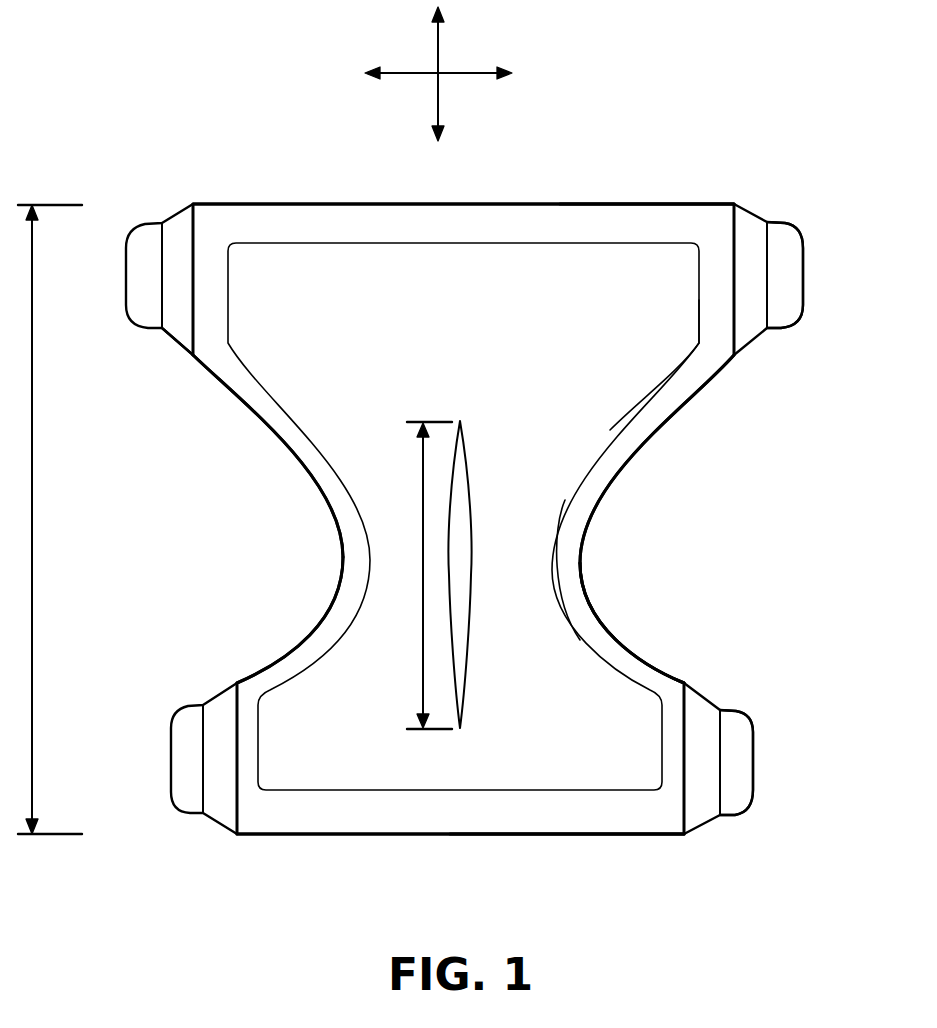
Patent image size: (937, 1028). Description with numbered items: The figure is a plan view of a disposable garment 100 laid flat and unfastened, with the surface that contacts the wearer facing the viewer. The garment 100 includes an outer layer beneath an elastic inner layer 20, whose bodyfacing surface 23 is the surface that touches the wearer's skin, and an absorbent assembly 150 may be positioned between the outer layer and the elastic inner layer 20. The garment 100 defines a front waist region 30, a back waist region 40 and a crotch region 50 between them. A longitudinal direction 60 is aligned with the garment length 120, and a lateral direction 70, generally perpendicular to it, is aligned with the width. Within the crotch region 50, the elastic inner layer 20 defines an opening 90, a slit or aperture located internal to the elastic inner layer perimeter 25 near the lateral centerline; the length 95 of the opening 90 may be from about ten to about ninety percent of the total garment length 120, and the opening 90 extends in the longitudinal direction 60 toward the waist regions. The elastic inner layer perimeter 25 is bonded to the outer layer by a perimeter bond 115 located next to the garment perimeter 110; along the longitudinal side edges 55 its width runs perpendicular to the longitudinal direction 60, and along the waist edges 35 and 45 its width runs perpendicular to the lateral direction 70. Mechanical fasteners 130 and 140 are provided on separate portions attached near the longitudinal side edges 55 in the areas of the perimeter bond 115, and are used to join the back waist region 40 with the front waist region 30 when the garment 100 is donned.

The disposable garment 100 is at (704, 102).
The elastic inner layer 20 is at (598, 423).
The bodyfacing surface 23 is at (662, 320).
The absorbent assembly 150 is at (540, 585).
The mechanical fastener 140 is at (143, 232).
The mechanical fastener 130 is at (190, 793).
The garment perimeter 110 is at (272, 204).
The waist edge 45 is at (597, 202).
The perimeter bond 115 is at (336, 608).
The longitudinal side edge 55 is at (195, 323).
The waist edge 35 is at (405, 836).
The elastic inner layer perimeter 25 is at (620, 822).
The back waist region 40 is at (818, 293).
The crotch region 50 is at (758, 507).
The front waist region 30 is at (800, 752).
The opening 90 is at (467, 607).
The length of the opening 95 is at (421, 465).
The garment length 120 is at (34, 449).
The longitudinal direction 60 is at (440, 41).
The lateral direction 70 is at (478, 75).